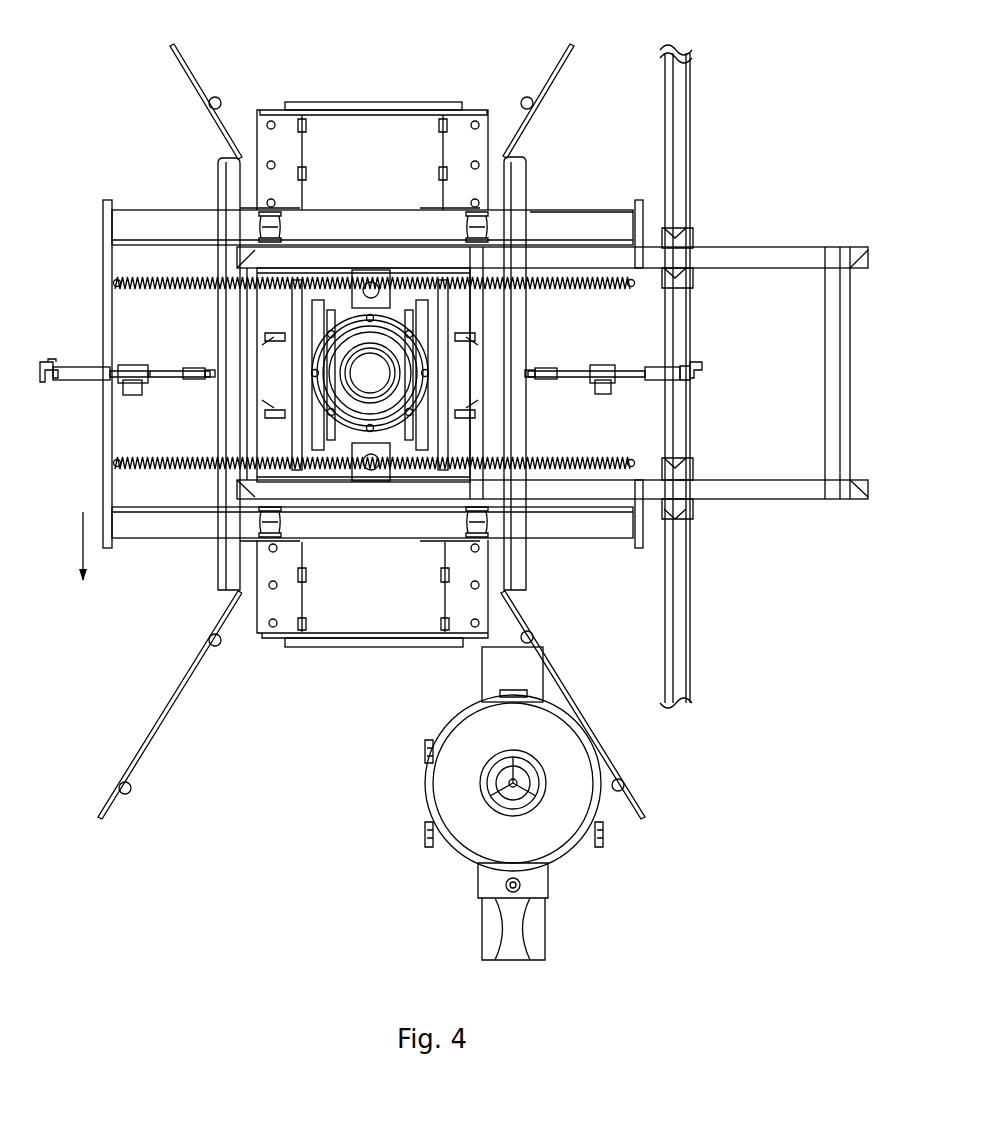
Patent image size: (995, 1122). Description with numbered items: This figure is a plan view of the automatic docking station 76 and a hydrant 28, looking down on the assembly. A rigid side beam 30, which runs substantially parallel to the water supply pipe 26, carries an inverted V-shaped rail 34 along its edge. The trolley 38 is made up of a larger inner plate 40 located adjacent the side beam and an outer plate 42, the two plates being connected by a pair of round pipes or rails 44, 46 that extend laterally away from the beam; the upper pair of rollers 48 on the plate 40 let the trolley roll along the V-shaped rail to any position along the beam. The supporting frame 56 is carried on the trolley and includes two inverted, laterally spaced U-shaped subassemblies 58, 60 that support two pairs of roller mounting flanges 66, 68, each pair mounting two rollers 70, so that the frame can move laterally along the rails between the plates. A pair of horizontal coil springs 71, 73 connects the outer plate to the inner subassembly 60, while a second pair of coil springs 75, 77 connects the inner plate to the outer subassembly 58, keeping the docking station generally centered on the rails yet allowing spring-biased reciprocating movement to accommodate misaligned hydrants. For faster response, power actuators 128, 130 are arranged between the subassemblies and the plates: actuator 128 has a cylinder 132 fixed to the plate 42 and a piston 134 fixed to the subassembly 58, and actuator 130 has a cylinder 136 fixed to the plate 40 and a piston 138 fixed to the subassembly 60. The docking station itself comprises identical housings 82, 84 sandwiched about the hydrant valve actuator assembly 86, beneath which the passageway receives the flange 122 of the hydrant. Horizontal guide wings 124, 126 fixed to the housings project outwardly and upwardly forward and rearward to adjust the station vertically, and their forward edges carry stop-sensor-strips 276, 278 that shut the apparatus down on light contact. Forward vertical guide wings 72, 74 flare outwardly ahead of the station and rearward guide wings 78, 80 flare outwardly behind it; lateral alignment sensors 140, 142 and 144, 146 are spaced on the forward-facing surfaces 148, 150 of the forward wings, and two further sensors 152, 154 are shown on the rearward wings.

The water supply pipe 26 is at (490, 657).
The hydrant 28 is at (425, 801).
The side beam 30 is at (690, 127).
The inverted V-shaped rail 34 is at (690, 560).
The trolley 38 is at (572, 206).
The plate 40 is at (680, 405).
The plate 42 is at (107, 442).
The pipe or rail 44 is at (146, 532).
The pipe or rail 46 is at (152, 220).
The upper pair of rollers 48 is at (693, 240).
The supporting frame 56 is at (208, 587).
The inverted U-shaped subassembly 58 is at (217, 332).
The inverted U-shaped subassembly 60 is at (530, 335).
The roller mounting flange 66 is at (440, 205).
The roller mounting flange 68 is at (320, 550).
The roller 70 is at (258, 225).
The coil spring 71 is at (156, 291).
The guide wing 72 is at (605, 727).
The coil spring 73 is at (128, 461).
The guide wing 74 is at (182, 743).
The coil spring 75 is at (596, 291).
The docking station 76 is at (115, 595).
The coil spring 77 is at (588, 458).
The guide wing 78 is at (565, 65).
The guide wing 80 is at (175, 72).
The housing 82 is at (445, 422).
The housing 84 is at (280, 423).
The hydrant valve actuator assembly 86 is at (337, 315).
The hydrant flange 122 is at (478, 830).
The horizontal guide wing 124 is at (348, 625).
The horizontal guide wing 126 is at (342, 130).
The power actuator 128 is at (78, 360).
The power actuator 130 is at (655, 357).
The cylinder 132 is at (84, 380).
The piston 134 is at (165, 372).
The cylinder 136 is at (688, 380).
The piston 138 is at (590, 372).
The lateral alignment sensor 140 is at (620, 791).
The lateral alignment sensor 142 is at (518, 640).
The lateral alignment sensor 144 is at (131, 794).
The lateral alignment sensor 146 is at (218, 647).
The forward-facing surface 148 is at (566, 704).
The forward-facing surface 150 is at (133, 758).
The lateral alignment sensor 152 is at (522, 99).
The lateral alignment sensor 154 is at (218, 97).
The stop-sensor-strip 276 is at (330, 650).
The stop-sensor-strip 278 is at (400, 102).